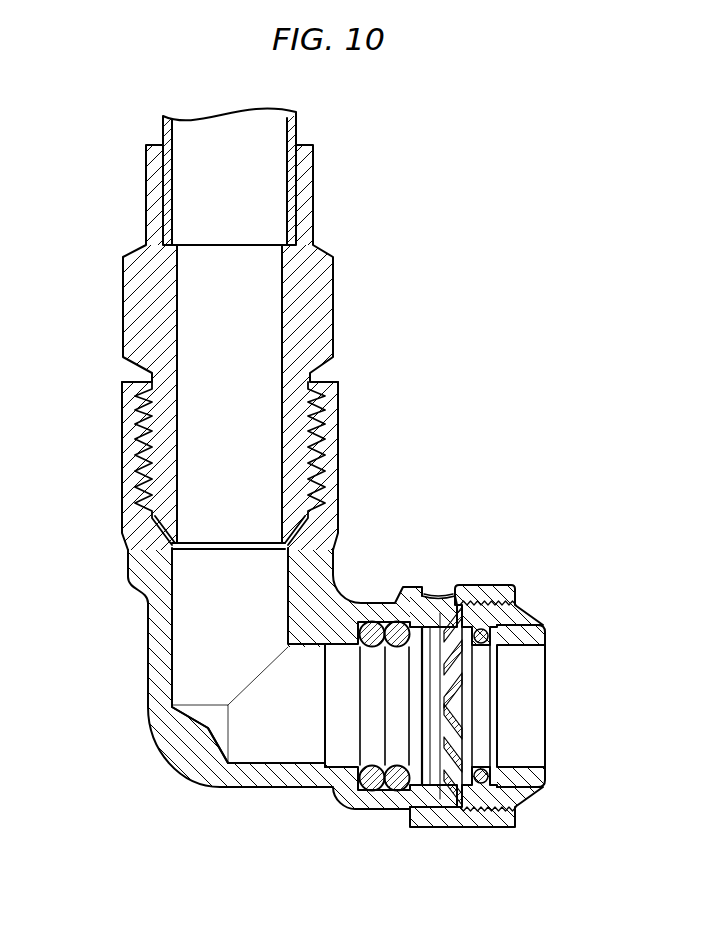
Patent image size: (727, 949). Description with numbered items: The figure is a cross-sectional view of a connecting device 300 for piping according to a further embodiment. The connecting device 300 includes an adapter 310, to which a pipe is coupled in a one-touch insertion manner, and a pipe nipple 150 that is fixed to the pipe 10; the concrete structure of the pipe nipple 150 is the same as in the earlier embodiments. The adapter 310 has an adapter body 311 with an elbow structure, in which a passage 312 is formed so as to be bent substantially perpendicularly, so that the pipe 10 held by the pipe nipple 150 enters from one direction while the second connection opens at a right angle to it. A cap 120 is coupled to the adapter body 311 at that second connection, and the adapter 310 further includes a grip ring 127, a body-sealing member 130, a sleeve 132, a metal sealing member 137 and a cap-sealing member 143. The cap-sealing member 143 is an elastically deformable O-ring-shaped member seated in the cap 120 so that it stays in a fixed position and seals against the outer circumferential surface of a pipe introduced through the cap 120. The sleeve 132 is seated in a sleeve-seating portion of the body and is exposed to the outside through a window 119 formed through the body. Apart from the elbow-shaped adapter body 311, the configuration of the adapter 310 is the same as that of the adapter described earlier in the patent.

The pipe 10 is at (298, 127).
The pipe nipple 150 is at (357, 309).
The connecting device for piping 300 is at (468, 336).
The adapter 310 is at (459, 472).
The adapter body 311 is at (338, 580).
The passage 312 is at (214, 647).
The metal sealing member 137 is at (152, 538).
The window 119 is at (440, 596).
The cap-sealing member 143 is at (490, 620).
The cap 120 is at (542, 608).
The body-sealing member 130 is at (397, 792).
The sleeve 132 is at (430, 813).
The grip ring 127 is at (453, 797).